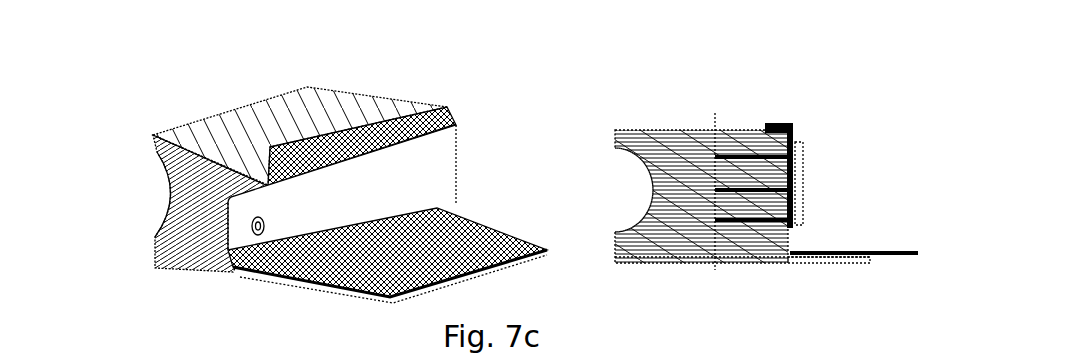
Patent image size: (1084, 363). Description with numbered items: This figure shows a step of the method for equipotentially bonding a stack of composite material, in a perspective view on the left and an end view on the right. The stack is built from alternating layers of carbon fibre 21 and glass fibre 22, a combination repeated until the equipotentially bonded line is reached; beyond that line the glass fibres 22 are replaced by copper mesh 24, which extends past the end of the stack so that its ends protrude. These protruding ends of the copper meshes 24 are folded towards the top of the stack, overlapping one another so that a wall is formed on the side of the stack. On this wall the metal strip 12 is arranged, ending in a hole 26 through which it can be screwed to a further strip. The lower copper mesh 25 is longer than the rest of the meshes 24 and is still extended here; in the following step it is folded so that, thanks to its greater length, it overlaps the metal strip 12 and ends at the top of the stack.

The metal strip 12 is at (442, 173).
The carbon fibre 21 is at (227, 120).
The glass fibre 22 is at (172, 164).
The copper mesh 24 is at (417, 115).
The lower copper mesh 25 is at (468, 243).
The hole 26 is at (252, 232).